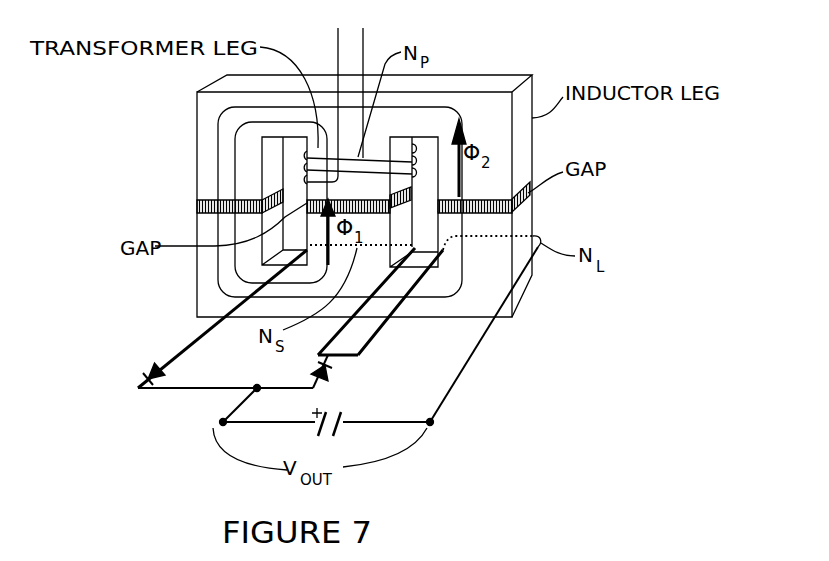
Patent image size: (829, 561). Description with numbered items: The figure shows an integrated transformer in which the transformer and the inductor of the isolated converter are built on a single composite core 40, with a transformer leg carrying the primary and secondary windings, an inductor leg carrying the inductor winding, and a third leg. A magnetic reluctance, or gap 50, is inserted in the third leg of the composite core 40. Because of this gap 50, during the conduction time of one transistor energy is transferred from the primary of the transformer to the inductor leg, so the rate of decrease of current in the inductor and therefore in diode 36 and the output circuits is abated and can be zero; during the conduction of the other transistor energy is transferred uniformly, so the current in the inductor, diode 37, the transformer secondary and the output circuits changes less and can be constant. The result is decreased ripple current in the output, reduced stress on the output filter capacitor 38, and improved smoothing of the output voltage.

The composite core 40 is at (534, 80).
The magnetic reluctance (gap) 50 is at (197, 207).
The diode 37 is at (140, 374).
The diode 36 is at (335, 375).
The output filter capacitor 38 is at (345, 413).